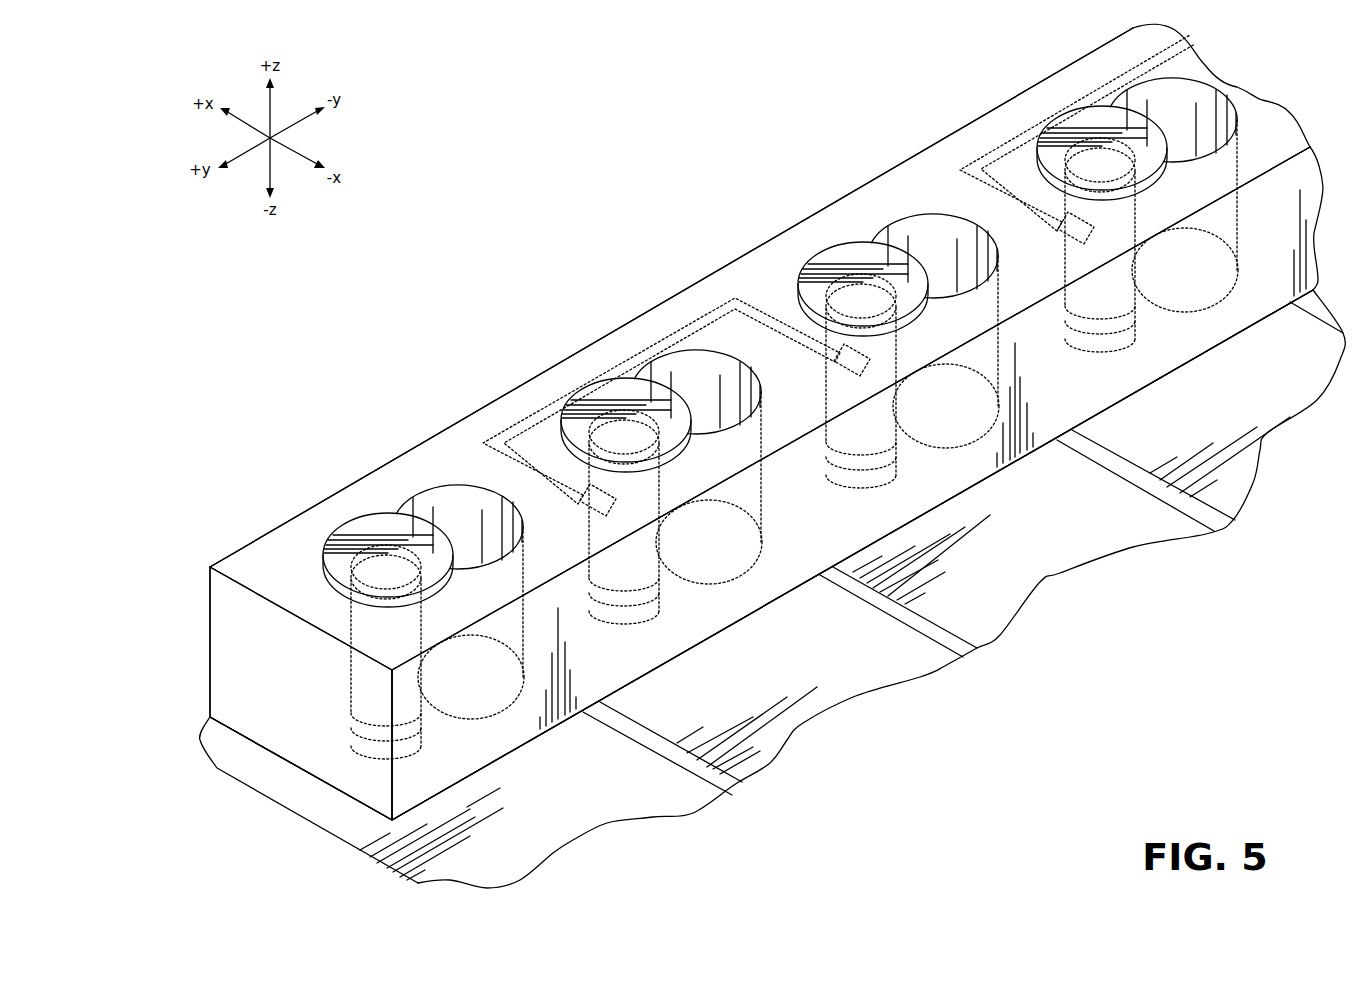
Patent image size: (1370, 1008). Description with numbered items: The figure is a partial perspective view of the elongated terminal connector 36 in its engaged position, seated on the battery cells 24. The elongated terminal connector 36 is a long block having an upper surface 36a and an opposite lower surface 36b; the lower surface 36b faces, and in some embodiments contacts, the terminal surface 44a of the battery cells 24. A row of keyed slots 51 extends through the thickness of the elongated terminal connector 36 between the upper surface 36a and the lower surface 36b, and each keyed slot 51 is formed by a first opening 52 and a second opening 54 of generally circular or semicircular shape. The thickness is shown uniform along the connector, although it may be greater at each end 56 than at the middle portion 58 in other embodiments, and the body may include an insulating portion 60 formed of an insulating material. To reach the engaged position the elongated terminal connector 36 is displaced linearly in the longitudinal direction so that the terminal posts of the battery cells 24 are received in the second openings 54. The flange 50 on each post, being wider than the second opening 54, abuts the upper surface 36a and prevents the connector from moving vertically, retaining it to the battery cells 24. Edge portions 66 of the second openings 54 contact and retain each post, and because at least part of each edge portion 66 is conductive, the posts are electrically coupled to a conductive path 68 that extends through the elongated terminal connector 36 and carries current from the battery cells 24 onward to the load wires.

The battery cell 24 is at (866, 718).
The elongated terminal connector 36 is at (253, 440).
The upper surface 36a is at (237, 558).
The lower surface 36b is at (440, 793).
The terminal surface 44a is at (569, 804).
The flange 50 is at (828, 436).
The keyed slot 51 is at (816, 364).
The first opening 52 is at (814, 284).
The second opening 54 is at (742, 330).
The end 56 is at (268, 610).
The middle portion 58 is at (760, 262).
The insulating portion 60 is at (297, 692).
The edge portion 66 is at (762, 448).
The conductive path 68 is at (496, 436).